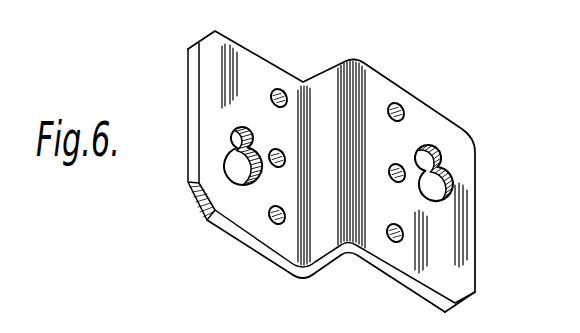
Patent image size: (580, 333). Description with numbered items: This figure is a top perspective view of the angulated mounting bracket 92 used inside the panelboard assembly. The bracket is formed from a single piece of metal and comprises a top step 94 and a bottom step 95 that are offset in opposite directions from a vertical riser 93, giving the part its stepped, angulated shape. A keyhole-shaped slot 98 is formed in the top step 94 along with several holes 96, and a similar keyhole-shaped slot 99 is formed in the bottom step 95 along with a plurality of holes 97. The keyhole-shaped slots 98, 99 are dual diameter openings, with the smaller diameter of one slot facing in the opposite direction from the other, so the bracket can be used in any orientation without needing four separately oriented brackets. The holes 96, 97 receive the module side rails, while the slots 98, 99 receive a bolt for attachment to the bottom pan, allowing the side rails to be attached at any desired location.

The angulated mounting bracket 92 is at (368, 53).
The vertical riser 93 is at (333, 80).
The top step 94 is at (447, 130).
The bottom step 95 is at (213, 97).
The holes 96 is at (405, 110).
The holes 97 is at (273, 227).
The keyhole-shaped slot 98 is at (447, 180).
The keyhole-shaped slot 99 is at (227, 157).